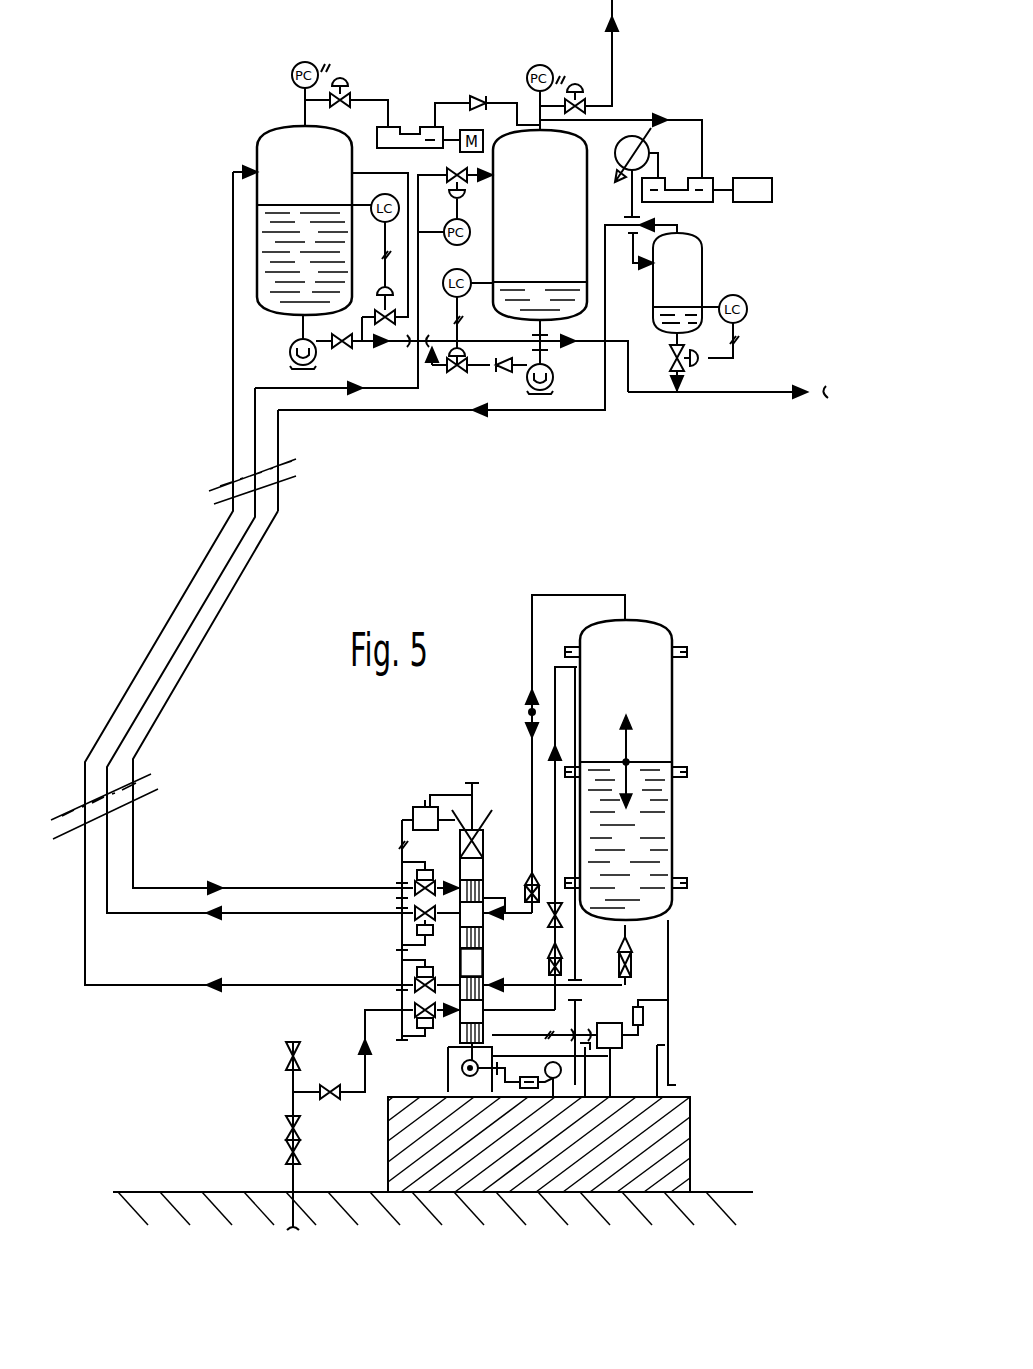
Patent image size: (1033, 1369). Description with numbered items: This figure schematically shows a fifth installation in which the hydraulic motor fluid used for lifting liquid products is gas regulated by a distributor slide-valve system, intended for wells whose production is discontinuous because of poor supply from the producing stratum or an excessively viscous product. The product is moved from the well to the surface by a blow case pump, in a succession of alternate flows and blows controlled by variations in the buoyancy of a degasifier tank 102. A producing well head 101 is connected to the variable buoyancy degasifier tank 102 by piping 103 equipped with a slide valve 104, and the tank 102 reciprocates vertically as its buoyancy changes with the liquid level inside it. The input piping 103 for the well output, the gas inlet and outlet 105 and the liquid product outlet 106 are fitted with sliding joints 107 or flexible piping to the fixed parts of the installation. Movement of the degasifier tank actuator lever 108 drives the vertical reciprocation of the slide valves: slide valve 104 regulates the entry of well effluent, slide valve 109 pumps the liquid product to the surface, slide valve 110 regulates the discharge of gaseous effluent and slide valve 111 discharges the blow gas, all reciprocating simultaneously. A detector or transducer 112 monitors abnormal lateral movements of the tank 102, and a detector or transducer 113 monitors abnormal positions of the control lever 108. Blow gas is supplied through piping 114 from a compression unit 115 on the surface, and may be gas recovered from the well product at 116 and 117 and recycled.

The producing well head 101 is at (291, 1091).
The degasifier tank 102 is at (672, 726).
The piping 103 is at (555, 727).
The slide valve 104 is at (462, 1028).
The gas inlet and outlet 105 is at (532, 662).
The liquid product outlet 106 is at (627, 955).
The sliding joints 107 is at (556, 940).
The degasifier tank actuator lever 108 is at (613, 1053).
The slide valve 109 is at (460, 947).
The slide valve 110 is at (460, 940).
The slide valve 111 is at (460, 880).
The detector or transducer 112 is at (610, 1025).
The detector or transducer 113 is at (538, 1088).
The piping 114 is at (218, 618).
The compression unit 115 is at (703, 178).
The gas recovery point 116 is at (283, 148).
The gas recovery point 117 is at (515, 150).